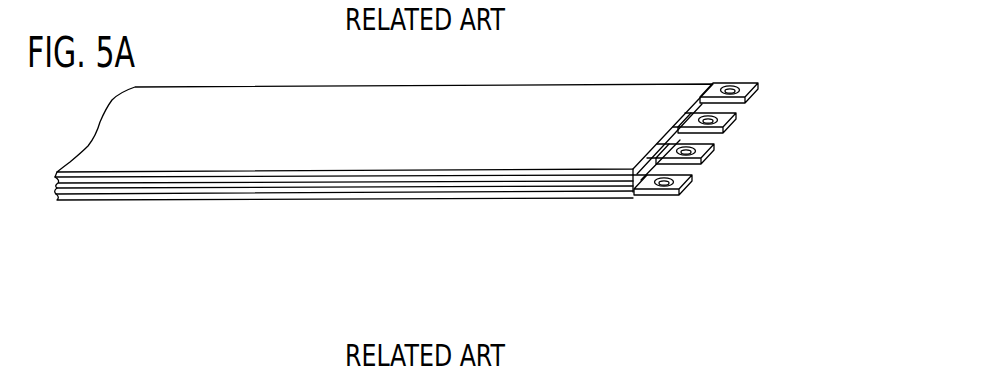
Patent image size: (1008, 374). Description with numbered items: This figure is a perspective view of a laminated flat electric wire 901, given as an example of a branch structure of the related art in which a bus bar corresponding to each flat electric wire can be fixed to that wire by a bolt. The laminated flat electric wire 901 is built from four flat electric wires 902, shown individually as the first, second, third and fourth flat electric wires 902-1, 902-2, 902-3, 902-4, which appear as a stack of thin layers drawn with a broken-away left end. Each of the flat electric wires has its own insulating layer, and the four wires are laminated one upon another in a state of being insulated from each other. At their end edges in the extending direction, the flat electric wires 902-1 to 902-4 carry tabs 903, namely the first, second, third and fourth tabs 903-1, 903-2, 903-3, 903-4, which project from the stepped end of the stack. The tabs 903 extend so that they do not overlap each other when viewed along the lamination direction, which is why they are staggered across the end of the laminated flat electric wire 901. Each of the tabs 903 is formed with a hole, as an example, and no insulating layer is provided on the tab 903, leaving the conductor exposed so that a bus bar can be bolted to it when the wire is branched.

The laminated flat electric wire 901 is at (387, 74).
The flat electric wires 902 is at (158, 366).
The first flat electric wire 902-1 is at (198, 172).
The second flat electric wire 902-2 is at (163, 182).
The third flat electric wire 902-3 is at (129, 192).
The fourth flat electric wire 902-4 is at (92, 200).
The tabs 903 is at (902, 99).
The first tab 903-1 is at (762, 90).
The second tab 903-2 is at (725, 127).
The third tab 903-3 is at (702, 158).
The fourth tab 903-4 is at (680, 188).